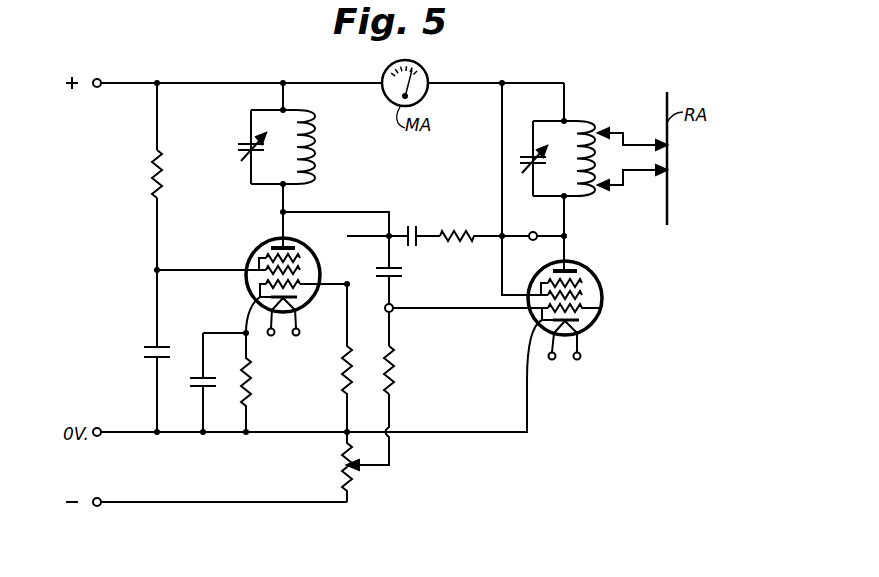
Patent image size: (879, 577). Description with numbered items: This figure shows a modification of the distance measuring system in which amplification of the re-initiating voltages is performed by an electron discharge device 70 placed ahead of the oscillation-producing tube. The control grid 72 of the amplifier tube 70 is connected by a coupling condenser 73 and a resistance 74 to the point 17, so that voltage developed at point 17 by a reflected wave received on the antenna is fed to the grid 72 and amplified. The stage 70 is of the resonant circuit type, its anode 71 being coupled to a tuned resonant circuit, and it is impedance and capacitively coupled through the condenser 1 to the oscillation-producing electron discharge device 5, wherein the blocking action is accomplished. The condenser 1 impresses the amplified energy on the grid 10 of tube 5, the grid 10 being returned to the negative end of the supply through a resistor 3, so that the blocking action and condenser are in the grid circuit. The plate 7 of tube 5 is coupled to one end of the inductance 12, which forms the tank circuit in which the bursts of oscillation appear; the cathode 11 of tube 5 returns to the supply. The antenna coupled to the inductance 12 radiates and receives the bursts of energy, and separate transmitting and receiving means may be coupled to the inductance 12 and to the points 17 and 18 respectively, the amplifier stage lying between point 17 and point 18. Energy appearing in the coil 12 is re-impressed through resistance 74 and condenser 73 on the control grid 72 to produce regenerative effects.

The coupling condenser 1 is at (404, 272).
The resistor 3 is at (395, 371).
The electron discharge device 5 is at (582, 339).
The plate 7 is at (580, 273).
The grid 10 is at (600, 309).
The cathode 11 is at (597, 326).
The inductance 12 is at (565, 138).
The point 17 is at (533, 231).
The point 18 is at (385, 312).
The electron discharge device 70 is at (285, 277).
The anode 71 is at (298, 250).
The control grid 72 is at (301, 288).
The coupling condenser 73 is at (426, 212).
The resistance 74 is at (477, 210).